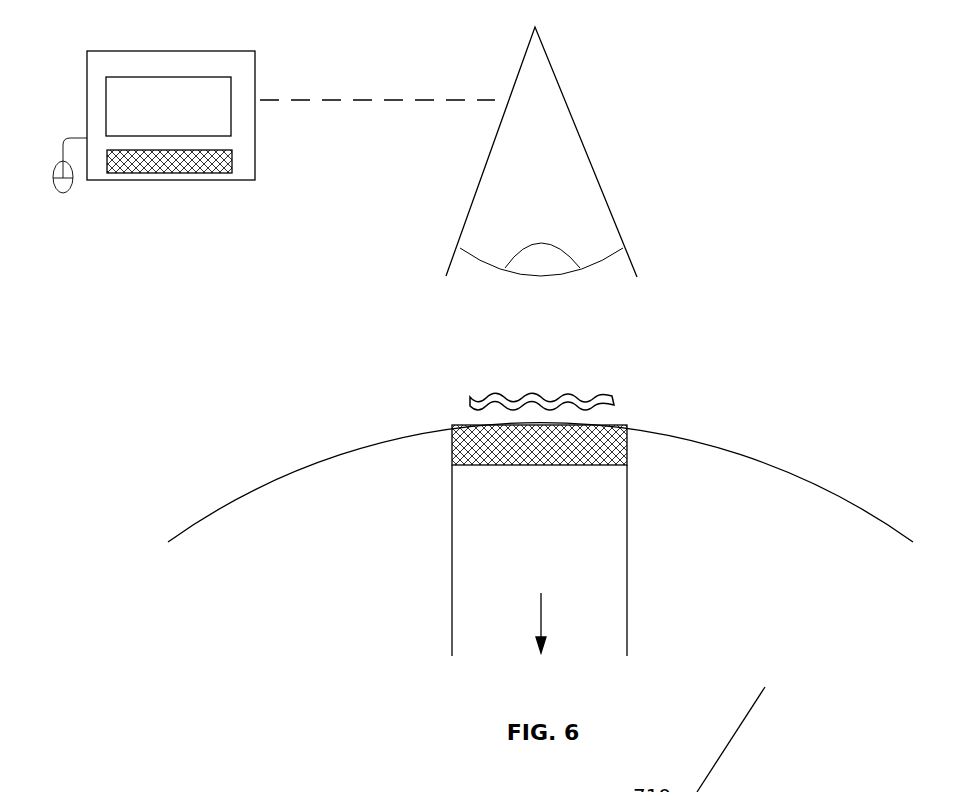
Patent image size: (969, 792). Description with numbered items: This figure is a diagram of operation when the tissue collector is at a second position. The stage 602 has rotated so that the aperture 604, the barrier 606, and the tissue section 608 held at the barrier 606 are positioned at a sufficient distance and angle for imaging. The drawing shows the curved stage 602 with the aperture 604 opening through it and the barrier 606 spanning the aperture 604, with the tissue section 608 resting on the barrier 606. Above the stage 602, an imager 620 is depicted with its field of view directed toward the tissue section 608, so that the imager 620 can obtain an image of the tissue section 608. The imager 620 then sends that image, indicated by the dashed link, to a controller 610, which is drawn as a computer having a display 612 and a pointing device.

The stage 602 is at (830, 522).
The aperture 604 is at (625, 423).
The barrier 606 is at (613, 448).
The tissue section 608 is at (538, 392).
The controller 610 is at (238, 62).
The display 612 is at (182, 90).
The imager 620 is at (505, 185).